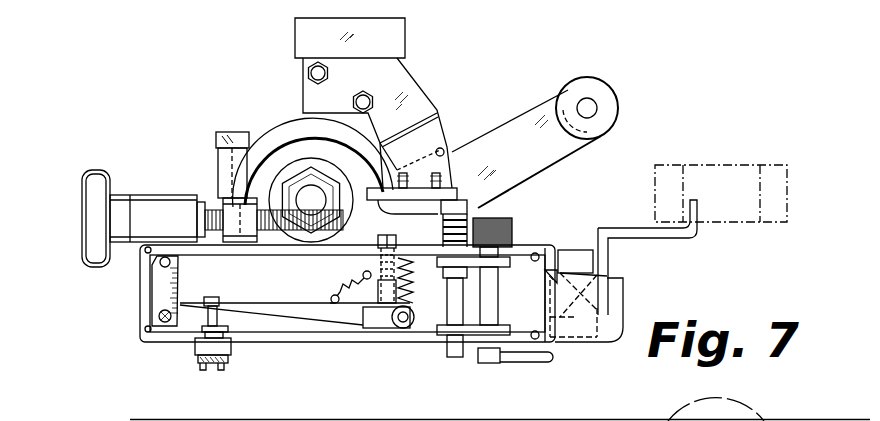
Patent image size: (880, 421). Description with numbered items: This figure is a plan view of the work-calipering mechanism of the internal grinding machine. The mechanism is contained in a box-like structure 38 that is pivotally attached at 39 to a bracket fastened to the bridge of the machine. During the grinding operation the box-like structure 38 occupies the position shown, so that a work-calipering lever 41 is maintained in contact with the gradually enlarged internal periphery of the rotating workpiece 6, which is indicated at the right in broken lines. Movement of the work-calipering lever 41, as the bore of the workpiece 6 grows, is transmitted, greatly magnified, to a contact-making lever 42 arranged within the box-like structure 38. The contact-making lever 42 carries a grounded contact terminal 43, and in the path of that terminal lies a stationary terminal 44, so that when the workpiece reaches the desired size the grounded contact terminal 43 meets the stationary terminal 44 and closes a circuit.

The workpiece 6 is at (770, 167).
The box-like structure 38 is at (377, 336).
The pivot 39 is at (308, 199).
The work-calipering lever 41 is at (672, 238).
The contact-making lever 42 is at (318, 316).
The grounded contact terminal 43 is at (213, 304).
The stationary terminal 44 is at (230, 344).